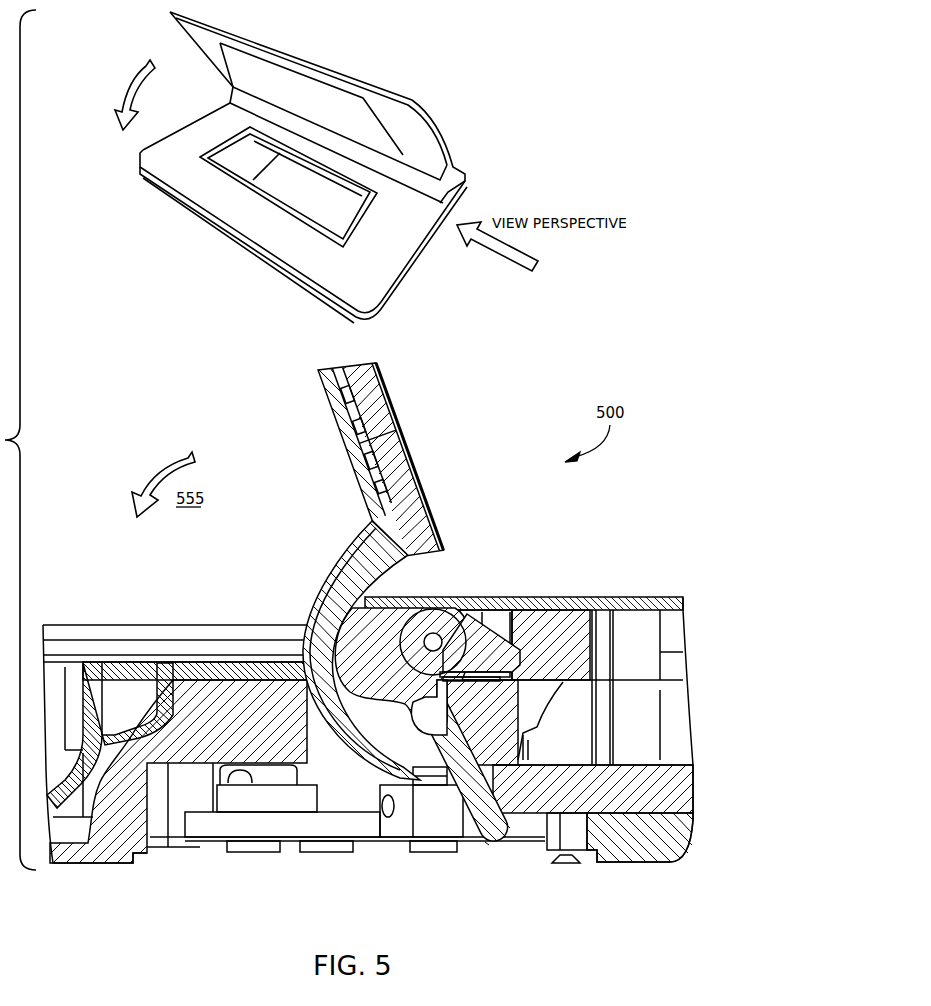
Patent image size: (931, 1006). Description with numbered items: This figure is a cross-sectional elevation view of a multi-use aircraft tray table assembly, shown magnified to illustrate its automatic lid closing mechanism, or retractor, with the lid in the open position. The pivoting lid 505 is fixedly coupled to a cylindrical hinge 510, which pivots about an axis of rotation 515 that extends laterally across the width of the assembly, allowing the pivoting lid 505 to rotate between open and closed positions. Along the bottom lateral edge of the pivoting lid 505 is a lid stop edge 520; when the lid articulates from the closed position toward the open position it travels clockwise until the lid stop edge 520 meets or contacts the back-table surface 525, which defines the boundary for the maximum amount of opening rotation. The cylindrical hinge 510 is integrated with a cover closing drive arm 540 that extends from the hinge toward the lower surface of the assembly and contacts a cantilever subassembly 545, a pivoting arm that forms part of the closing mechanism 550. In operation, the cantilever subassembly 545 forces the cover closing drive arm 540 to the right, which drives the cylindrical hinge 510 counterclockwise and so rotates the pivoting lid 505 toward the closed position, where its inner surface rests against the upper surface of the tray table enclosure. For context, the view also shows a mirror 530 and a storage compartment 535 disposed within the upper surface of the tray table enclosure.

The pivoting lid 505 is at (379, 460).
The cylindrical hinge 510 is at (357, 560).
The axis of rotation 515 is at (433, 633).
The lid stop edge 520 is at (443, 552).
The back-table surface 525 is at (618, 597).
The mirror 530 is at (338, 415).
The storage compartment 535 is at (165, 663).
The cover closing drive arm 540 is at (500, 845).
The cantilever subassembly 545 is at (388, 842).
The closing mechanism 550 is at (280, 876).